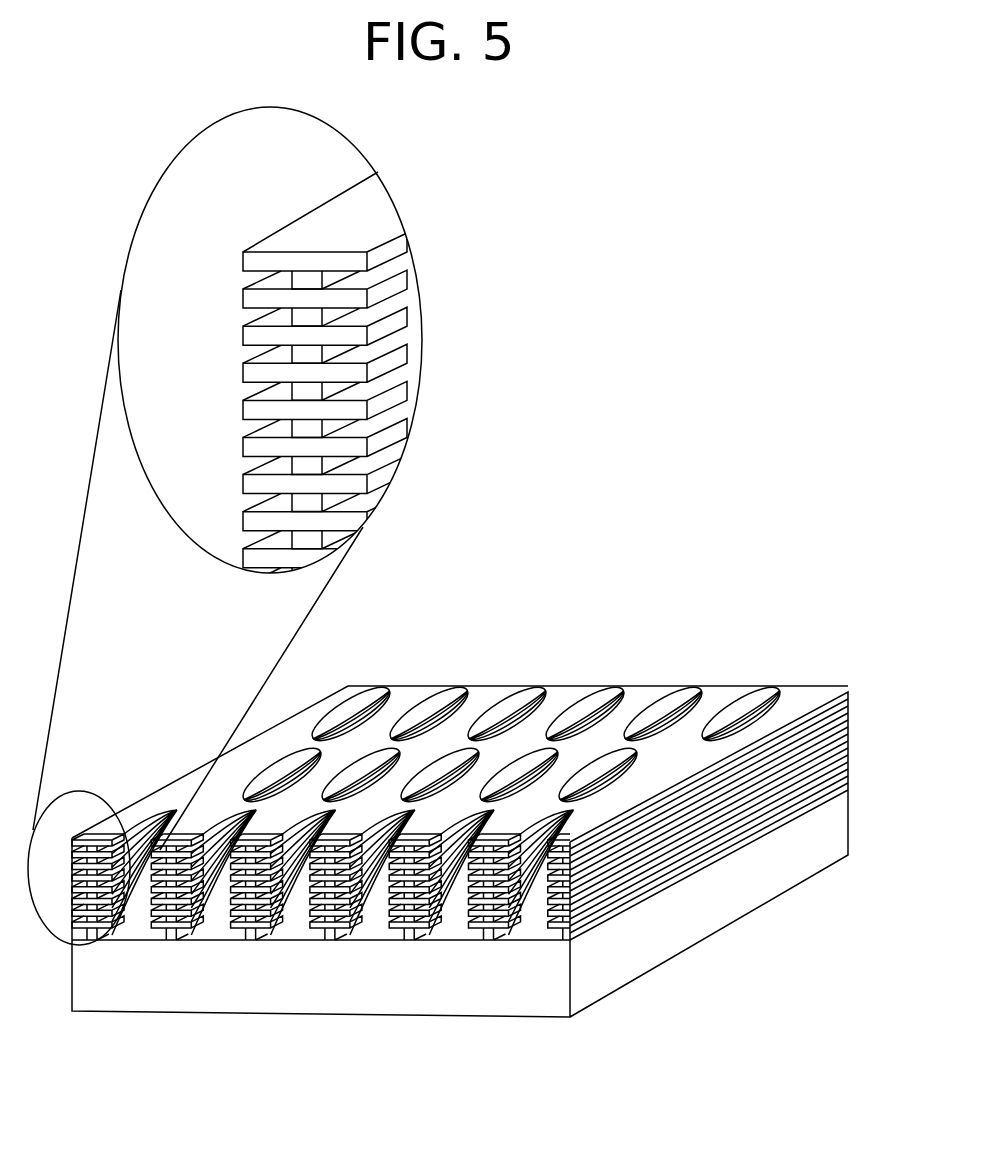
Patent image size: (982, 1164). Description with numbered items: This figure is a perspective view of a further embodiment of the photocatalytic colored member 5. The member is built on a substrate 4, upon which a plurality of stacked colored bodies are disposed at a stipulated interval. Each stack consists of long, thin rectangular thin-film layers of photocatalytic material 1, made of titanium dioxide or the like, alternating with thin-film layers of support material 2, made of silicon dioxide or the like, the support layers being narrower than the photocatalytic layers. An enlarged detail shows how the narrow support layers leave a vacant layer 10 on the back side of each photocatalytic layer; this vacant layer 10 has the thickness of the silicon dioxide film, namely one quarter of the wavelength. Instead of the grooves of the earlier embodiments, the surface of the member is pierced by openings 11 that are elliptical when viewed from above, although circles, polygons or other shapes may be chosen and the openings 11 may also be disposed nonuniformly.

The thin-film layer of photocatalytic material 1 is at (325, 252).
The thin-film layer of support material 2 is at (303, 280).
The vacant layer 10 is at (225, 526).
The opening 11 is at (152, 825).
The substrate 4 is at (657, 948).
The photocatalytic colored member 5 is at (460, 804).